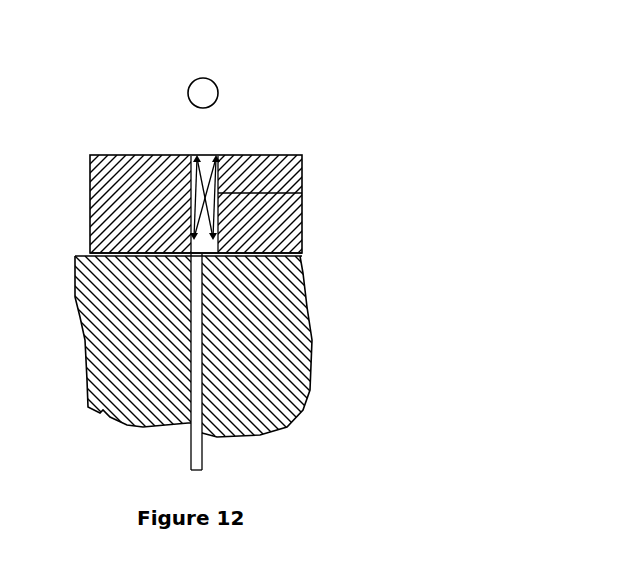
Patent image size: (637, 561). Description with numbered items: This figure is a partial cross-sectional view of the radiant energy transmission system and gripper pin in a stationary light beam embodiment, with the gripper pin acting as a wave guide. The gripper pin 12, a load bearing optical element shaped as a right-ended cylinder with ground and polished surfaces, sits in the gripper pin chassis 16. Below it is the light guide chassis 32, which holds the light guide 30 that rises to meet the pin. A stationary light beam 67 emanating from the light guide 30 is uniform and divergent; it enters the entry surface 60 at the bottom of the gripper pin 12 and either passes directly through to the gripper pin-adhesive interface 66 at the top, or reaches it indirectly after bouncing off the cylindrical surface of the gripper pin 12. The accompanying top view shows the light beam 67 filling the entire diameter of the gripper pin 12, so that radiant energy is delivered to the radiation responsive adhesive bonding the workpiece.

The gripper pin 12 is at (220, 90).
The gripper pin chassis 16 is at (302, 240).
The gripper pin-adhesive interface 66 is at (196, 155).
The stationary light beam 67 is at (188, 83).
The entry surface 60 is at (303, 277).
The light guide chassis 32 is at (310, 392).
The light guide 30 is at (190, 458).